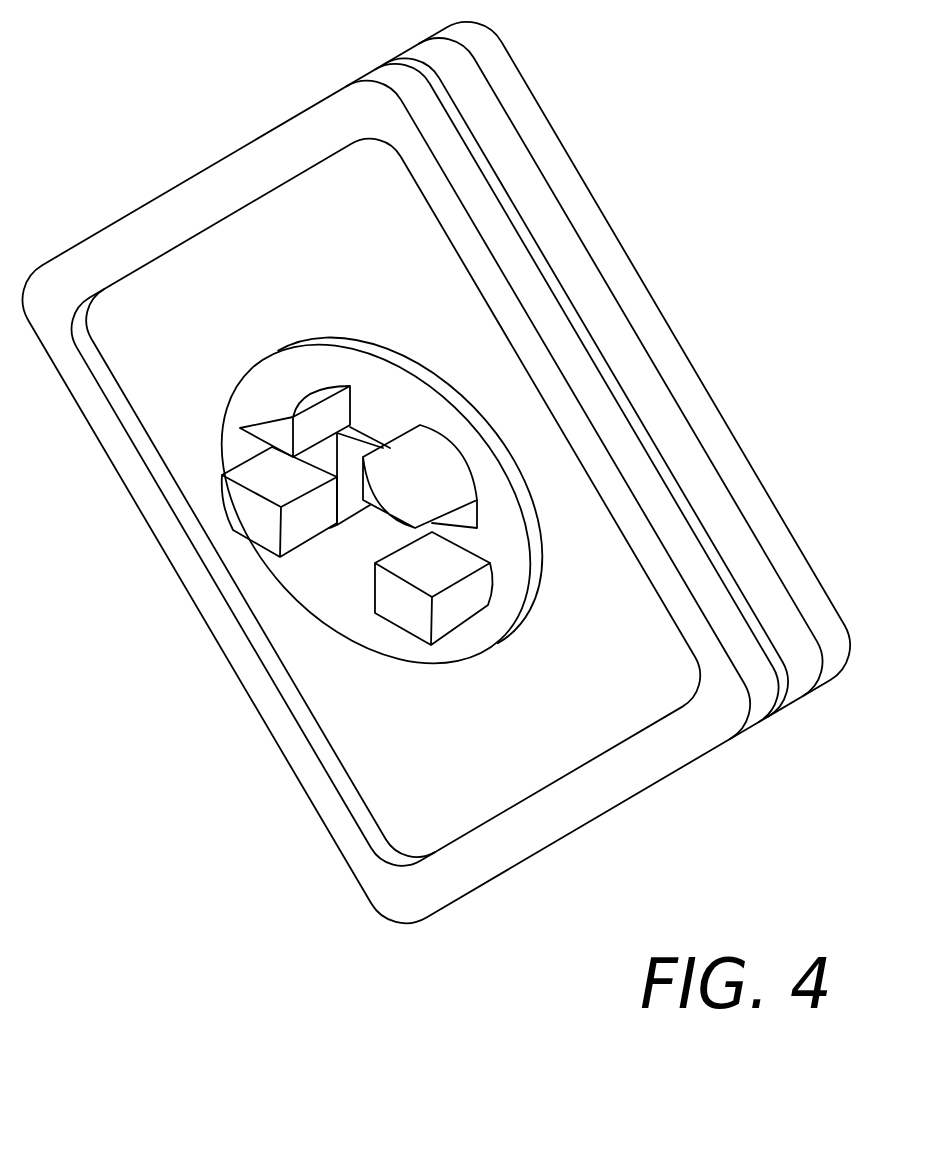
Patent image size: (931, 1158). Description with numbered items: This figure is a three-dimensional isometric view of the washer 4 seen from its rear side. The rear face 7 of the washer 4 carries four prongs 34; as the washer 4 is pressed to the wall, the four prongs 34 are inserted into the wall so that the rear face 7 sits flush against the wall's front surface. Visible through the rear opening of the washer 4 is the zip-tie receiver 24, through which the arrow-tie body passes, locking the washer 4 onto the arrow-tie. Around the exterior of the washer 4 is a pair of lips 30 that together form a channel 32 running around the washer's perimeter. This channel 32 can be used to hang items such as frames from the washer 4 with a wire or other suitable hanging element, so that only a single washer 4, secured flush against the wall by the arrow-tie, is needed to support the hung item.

The washer 4 is at (112, 111).
The rear face 7 is at (438, 756).
The zip-tie receiver 24 is at (368, 543).
The lips 30 is at (517, 260).
The channel 32 is at (626, 308).
The prongs 34 is at (370, 488).